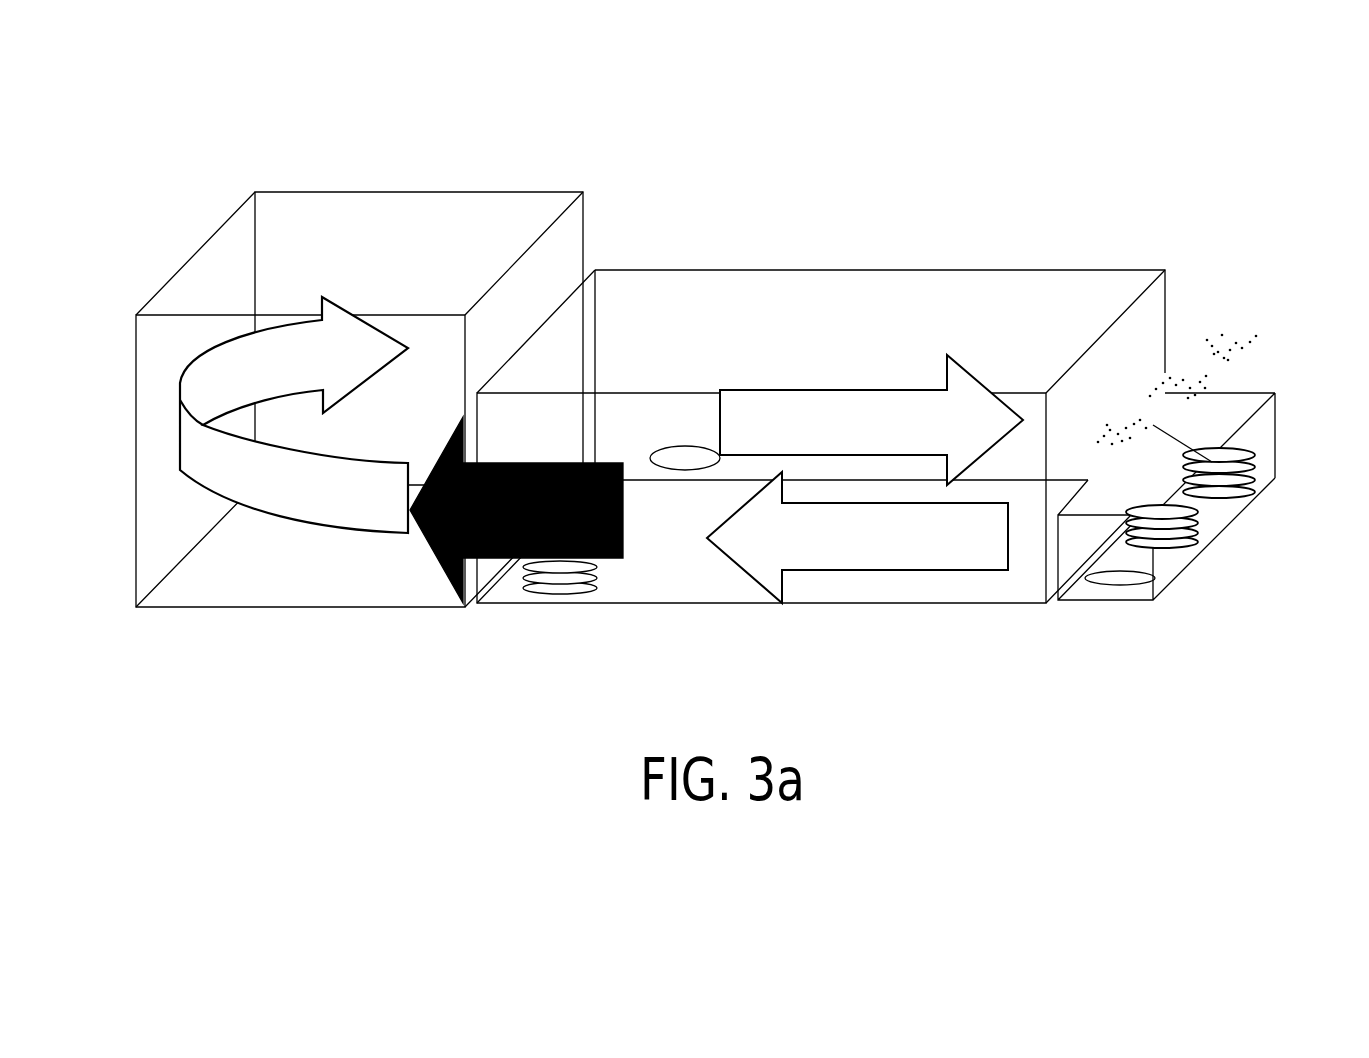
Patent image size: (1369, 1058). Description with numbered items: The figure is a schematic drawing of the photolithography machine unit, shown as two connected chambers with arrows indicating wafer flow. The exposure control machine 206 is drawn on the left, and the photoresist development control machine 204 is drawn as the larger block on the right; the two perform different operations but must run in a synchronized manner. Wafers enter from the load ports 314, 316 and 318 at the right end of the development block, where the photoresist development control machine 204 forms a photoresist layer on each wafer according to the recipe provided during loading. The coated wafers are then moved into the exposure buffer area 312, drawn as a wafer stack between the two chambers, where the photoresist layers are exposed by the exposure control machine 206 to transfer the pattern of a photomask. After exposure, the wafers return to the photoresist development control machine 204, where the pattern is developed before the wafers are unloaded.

The exposure control machine 206 is at (192, 273).
The photoresist development control machine 204 is at (842, 436).
The exposure buffer area 312 is at (550, 593).
The load port 314 is at (1253, 485).
The load port 316 is at (1193, 397).
The load port 318 is at (1238, 340).